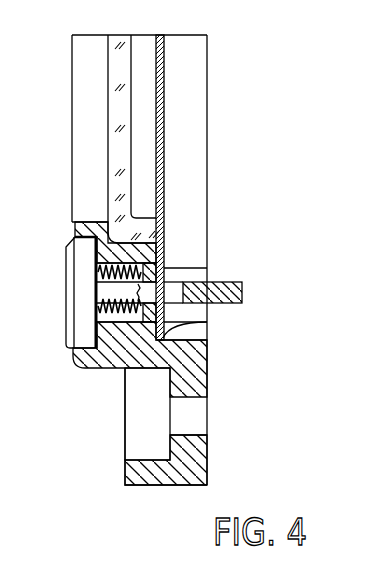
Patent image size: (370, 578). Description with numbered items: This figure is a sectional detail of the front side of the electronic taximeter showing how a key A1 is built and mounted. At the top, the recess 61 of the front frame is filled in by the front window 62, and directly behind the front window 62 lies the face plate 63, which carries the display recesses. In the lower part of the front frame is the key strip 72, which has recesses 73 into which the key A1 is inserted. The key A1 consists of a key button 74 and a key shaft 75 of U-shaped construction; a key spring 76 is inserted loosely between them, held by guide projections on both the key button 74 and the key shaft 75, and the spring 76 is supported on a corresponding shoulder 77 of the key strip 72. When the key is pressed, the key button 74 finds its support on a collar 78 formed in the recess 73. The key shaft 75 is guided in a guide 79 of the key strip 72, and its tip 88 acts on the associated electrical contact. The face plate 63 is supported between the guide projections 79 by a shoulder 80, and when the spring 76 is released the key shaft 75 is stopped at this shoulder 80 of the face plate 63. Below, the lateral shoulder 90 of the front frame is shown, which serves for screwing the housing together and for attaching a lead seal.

The recess 61 is at (88, 122).
The front window 62 is at (115, 64).
The face plate 63 is at (182, 70).
The key strip 72 is at (72, 366).
The recess 73 is at (72, 243).
The key button 74 is at (68, 340).
The key shaft 75 is at (216, 283).
The key spring 76 is at (93, 277).
The shoulder 77 is at (165, 260).
The collar 78 is at (100, 228).
The guide 79 is at (200, 311).
The shoulder 80 is at (208, 339).
The tip 88 is at (243, 296).
The lateral shoulder 90 is at (138, 476).
The key A1 is at (57, 328).